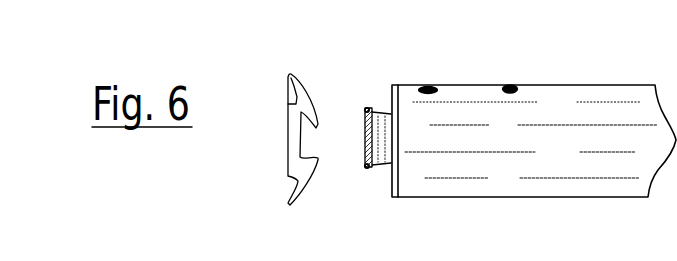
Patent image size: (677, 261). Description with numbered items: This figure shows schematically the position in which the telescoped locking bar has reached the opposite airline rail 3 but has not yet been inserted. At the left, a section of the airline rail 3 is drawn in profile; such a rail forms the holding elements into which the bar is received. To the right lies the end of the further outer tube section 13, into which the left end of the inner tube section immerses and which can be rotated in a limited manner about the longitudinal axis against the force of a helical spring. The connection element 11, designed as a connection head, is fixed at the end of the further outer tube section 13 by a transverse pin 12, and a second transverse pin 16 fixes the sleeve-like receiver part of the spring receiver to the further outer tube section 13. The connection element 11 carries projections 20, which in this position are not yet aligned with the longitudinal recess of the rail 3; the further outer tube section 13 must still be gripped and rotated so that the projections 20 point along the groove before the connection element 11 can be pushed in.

The airline rail 3 is at (297, 145).
The connection element 11 is at (364, 139).
The transverse pin 12 is at (431, 86).
The further outer tube section 13 is at (576, 158).
The transverse pin 16 is at (512, 85).
The projections 20 is at (369, 108).